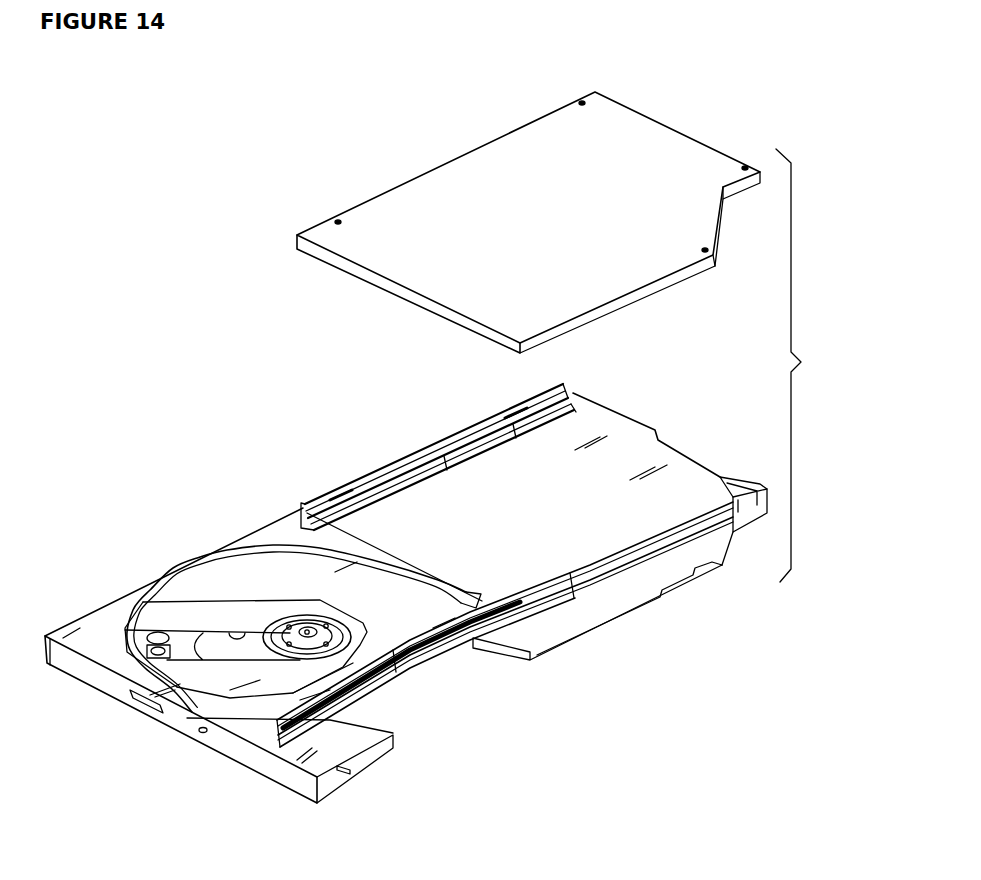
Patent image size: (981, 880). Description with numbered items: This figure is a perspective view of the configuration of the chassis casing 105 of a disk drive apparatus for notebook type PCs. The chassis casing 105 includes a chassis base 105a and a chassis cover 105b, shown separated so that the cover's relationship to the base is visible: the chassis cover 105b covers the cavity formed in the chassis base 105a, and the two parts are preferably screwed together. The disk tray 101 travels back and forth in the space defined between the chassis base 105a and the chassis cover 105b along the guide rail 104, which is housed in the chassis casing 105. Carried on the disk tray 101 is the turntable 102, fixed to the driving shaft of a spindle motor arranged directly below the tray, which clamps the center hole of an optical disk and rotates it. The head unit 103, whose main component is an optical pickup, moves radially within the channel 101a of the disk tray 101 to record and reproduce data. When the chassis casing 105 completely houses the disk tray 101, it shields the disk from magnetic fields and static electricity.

The disk tray 101 is at (210, 592).
The channel 101a is at (250, 628).
The turntable 102 is at (330, 618).
The head unit 103 is at (132, 640).
The guide rail 104 is at (355, 493).
The chassis casing 105 is at (852, 375).
The chassis base 105a is at (493, 493).
The chassis cover 105b is at (460, 178).